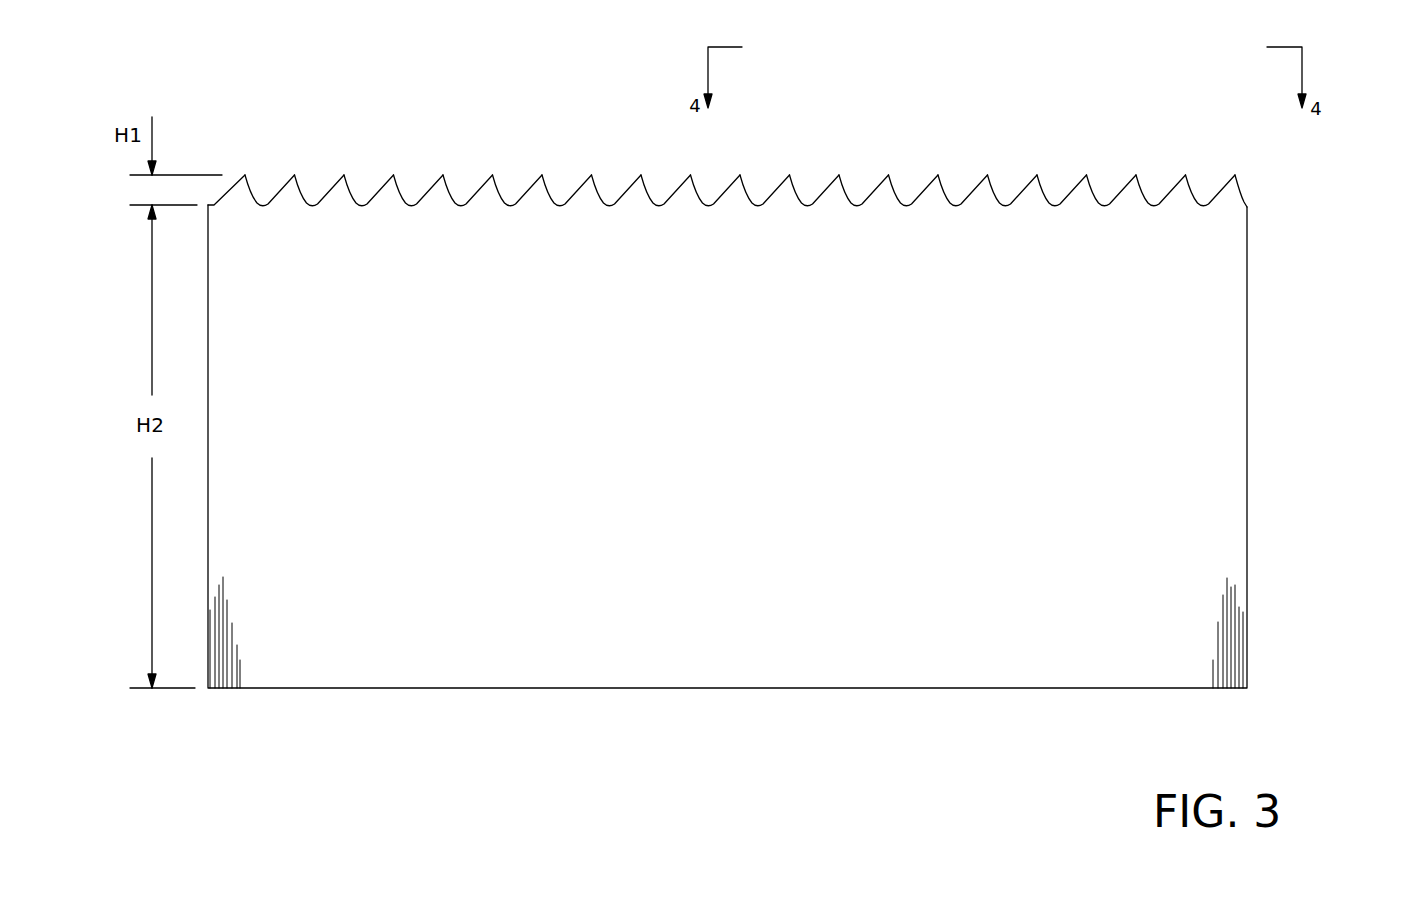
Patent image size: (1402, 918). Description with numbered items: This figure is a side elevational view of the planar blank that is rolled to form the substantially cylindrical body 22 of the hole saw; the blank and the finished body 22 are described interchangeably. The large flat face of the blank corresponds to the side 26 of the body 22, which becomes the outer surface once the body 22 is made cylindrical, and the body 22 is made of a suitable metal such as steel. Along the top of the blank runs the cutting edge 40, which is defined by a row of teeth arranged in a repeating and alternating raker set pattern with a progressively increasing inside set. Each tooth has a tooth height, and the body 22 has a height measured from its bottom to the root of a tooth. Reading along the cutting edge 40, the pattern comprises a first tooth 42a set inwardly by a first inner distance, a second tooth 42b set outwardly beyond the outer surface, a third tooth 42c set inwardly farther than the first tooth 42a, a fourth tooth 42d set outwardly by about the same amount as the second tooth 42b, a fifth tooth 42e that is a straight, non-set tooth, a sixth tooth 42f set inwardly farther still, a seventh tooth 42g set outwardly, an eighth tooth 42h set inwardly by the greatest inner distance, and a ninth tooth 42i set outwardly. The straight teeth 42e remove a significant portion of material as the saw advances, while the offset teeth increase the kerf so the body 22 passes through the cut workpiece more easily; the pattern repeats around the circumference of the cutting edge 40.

The body 22 is at (1255, 515).
The side 26 is at (1089, 349).
The cutting edge 40 is at (1250, 190).
The first tooth 42a is at (688, 184).
The second tooth 42b is at (638, 184).
The third tooth 42c is at (588, 184).
The fourth tooth 42d is at (539, 184).
The fifth tooth 42e is at (242, 184).
The sixth tooth 42f is at (440, 184).
The seventh tooth 42g is at (390, 184).
The eighth tooth 42h is at (341, 184).
The ninth tooth 42i is at (292, 184).